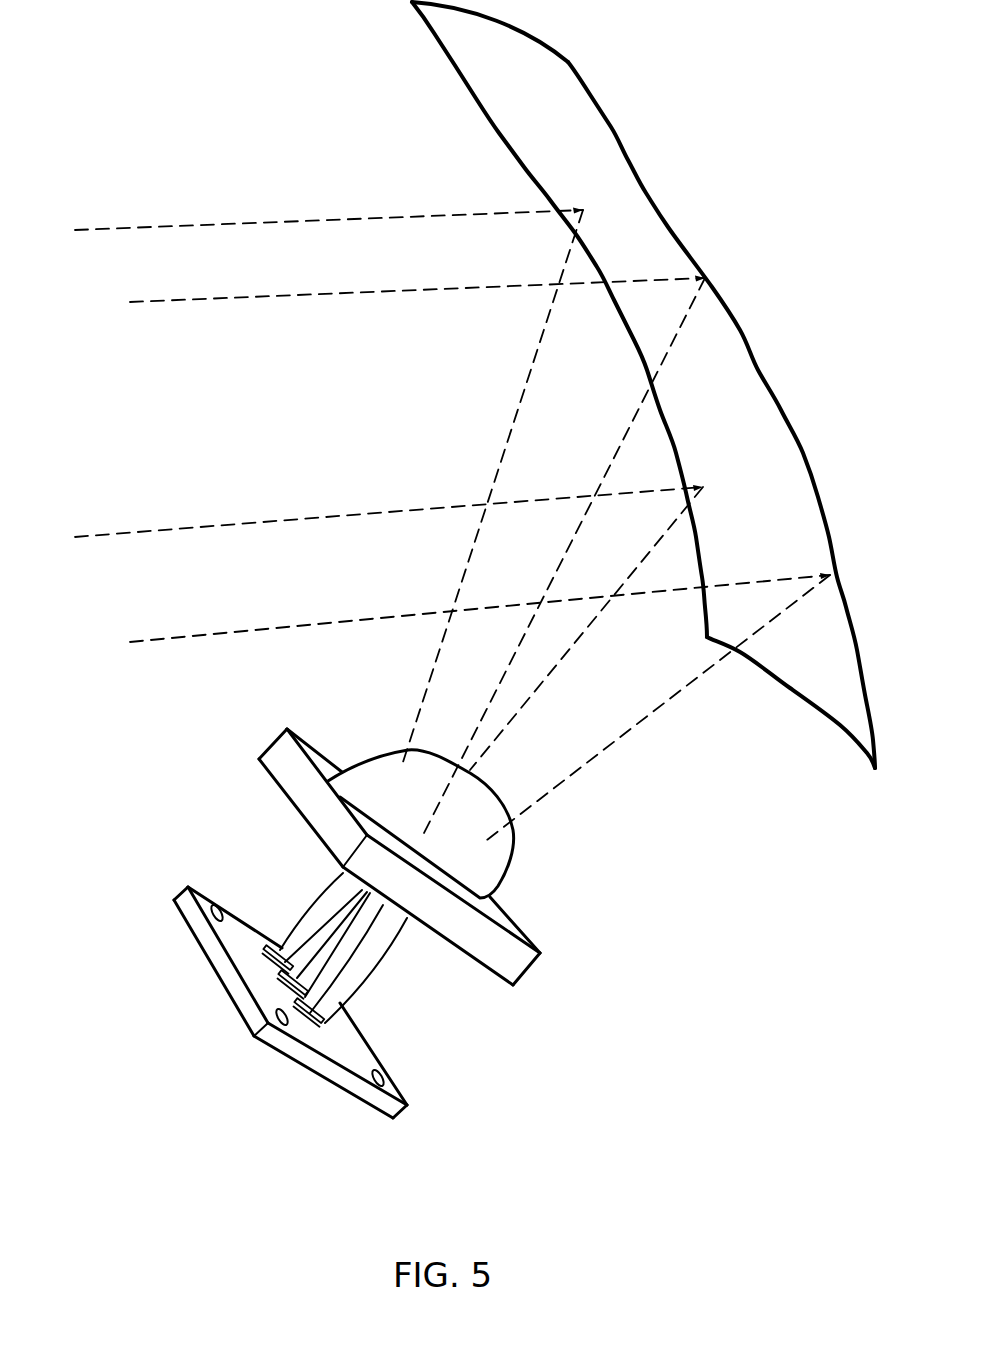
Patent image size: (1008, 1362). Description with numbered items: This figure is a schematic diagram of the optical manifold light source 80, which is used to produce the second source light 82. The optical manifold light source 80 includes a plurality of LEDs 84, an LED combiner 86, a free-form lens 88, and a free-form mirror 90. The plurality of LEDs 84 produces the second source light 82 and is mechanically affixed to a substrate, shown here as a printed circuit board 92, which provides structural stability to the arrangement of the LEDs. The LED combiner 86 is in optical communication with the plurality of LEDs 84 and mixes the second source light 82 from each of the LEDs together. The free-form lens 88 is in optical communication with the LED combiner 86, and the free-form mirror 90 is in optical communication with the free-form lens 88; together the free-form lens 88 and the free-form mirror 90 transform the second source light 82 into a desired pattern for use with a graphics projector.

The optical manifold light source 80 is at (128, 87).
The second source light 82 is at (308, 205).
The plurality of LEDs 84 is at (283, 948).
The LED combiner 86 is at (381, 977).
The free-form lens 88 is at (402, 767).
The free-form mirror 90 is at (800, 452).
The printed circuit board 92 is at (367, 1061).